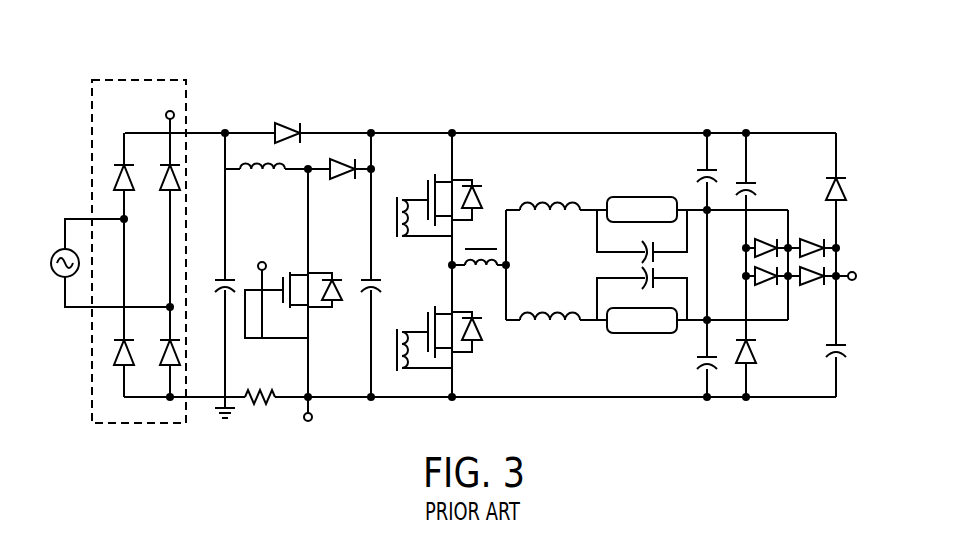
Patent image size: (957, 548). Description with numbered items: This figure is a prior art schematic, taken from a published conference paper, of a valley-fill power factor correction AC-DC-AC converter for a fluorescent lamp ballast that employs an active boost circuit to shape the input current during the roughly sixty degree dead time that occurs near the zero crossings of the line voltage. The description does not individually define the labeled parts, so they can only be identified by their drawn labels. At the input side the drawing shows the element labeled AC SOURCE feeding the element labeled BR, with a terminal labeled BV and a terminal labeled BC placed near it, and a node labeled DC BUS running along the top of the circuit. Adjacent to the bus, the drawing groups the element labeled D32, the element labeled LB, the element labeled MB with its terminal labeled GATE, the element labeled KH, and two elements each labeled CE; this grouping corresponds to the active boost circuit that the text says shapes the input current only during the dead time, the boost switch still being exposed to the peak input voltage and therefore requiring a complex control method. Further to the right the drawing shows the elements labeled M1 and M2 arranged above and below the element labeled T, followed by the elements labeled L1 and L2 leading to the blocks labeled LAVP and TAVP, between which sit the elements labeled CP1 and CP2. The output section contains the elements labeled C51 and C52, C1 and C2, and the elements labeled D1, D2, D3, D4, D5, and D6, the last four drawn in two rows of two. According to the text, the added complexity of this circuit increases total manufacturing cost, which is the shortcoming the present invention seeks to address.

The bridge rectifier BR is at (147, 80).
The bus voltage terminal BV is at (167, 101).
The diode D32 is at (288, 117).
The boost inductor LB is at (297, 182).
The boost MOSFET MB is at (293, 305).
The electrolytic capacitor CE is at (302, 276).
The resistor KH is at (260, 383).
The bus current terminal BC is at (305, 426).
The gate terminal GATE is at (260, 287).
The DC bus DC BUS is at (373, 116).
The AC source AC SOURCE is at (47, 191).
The MOSFET M1 is at (439, 205).
The MOSFET M2 is at (439, 338).
The transformer inductor T is at (481, 272).
The inductor L1 is at (550, 226).
The inductor L2 is at (550, 336).
The lamp anode voltage probe LAVP is at (642, 209).
The tube anode voltage probe TAVP is at (642, 320).
The capacitor CP1 is at (642, 236).
The capacitor CP2 is at (642, 293).
The capacitor C51 is at (691, 161).
The capacitor C52 is at (691, 374).
The capacitor C1 is at (758, 173).
The capacitor C2 is at (847, 368).
The diode D1 is at (759, 368).
The diode D2 is at (848, 175).
The diode D3 is at (765, 235).
The diode D4 is at (813, 235).
The diode D5 is at (765, 294).
The diode D6 is at (813, 294).